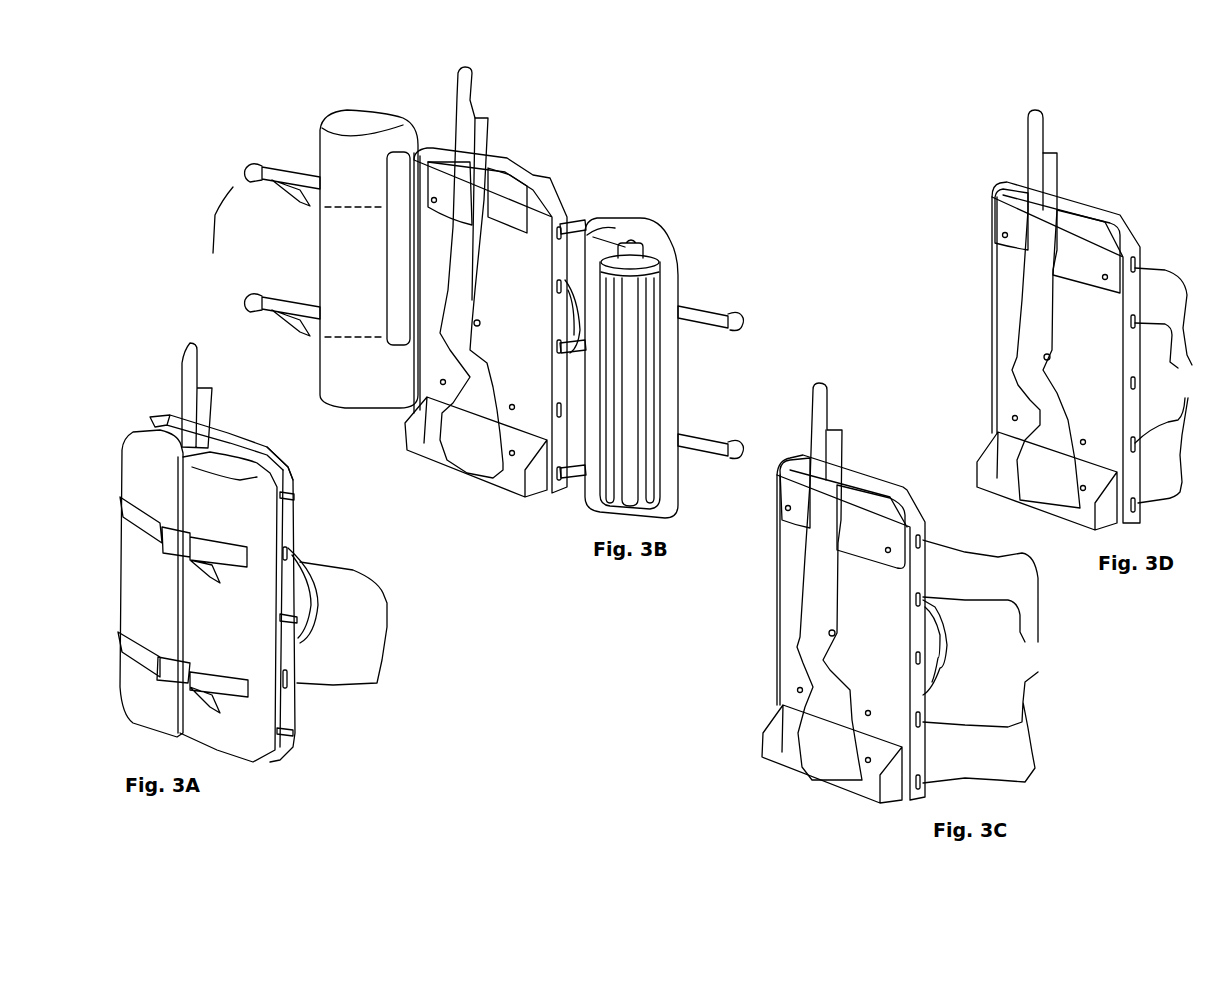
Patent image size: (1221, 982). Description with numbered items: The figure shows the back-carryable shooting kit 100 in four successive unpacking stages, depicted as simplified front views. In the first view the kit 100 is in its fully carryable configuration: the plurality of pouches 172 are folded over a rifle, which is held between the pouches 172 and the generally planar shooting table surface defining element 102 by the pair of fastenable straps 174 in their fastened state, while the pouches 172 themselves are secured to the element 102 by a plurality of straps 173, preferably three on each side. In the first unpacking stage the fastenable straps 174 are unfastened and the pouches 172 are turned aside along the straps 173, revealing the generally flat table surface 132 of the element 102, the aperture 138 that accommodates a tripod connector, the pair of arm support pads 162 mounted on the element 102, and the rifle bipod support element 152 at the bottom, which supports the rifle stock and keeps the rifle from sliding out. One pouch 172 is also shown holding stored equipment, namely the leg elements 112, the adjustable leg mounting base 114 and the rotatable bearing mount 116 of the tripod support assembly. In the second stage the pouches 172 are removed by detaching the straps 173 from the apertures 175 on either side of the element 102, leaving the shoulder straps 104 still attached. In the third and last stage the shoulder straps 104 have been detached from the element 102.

In FIG. 3A, the back-carryable shooting kit 100 is at (393, 735).
In FIG. 3B, the back-carryable shooting kit 100 is at (740, 168).
In FIG. 3C, the back-carryable shooting kit 100 is at (1066, 762).
In FIG. 3D, the back-carryable shooting kit 100 is at (1180, 183).
In FIG. 3B, the generally planar shooting table surface defining element 102 is at (498, 273).
In FIG. 3C, the generally planar shooting table surface defining element 102 is at (777, 572).
In FIG. 3D, the generally planar shooting table surface defining element 102 is at (1007, 280).
In FIG. 3A, the shoulder straps 104 is at (300, 642).
In FIG. 3B, the shoulder straps 104 is at (572, 316).
In FIG. 3C, the shoulder straps 104 is at (948, 632).
In FIG. 3B, the leg elements 112 is at (683, 298).
In FIG. 3B, the adjustable leg mounting base 114 is at (667, 267).
In FIG. 3B, the rotatable bearing mount 116 is at (663, 241).
In FIG. 3C, the generally flat table surface 132 is at (780, 652).
In FIG. 3D, the generally flat table surface 132 is at (1000, 358).
In FIG. 3B, the aperture 138 is at (481, 323).
In FIG. 3C, the aperture 138 is at (836, 633).
In FIG. 3D, the aperture 138 is at (1051, 357).
In FIG. 3B, the rifle bipod support element 152 is at (490, 487).
In FIG. 3C, the rifle bipod support element 152 is at (770, 733).
In FIG. 3D, the rifle bipod support element 152 is at (990, 457).
In FIG. 3B, the arm support pads 162 is at (427, 157).
In FIG. 3C, the arm support pads 162 is at (793, 480).
In FIG. 3D, the arm support pads 162 is at (1003, 197).
In FIG. 3A, the pouches 172 is at (150, 440).
In FIG. 3B, the pouches 172 is at (330, 128).
In FIG. 3A, the straps 173 is at (293, 498).
In FIG. 3B, the straps 173 is at (580, 222).
In FIG. 3A, the fastenable straps 174 is at (116, 527).
In FIG. 3B, the fastenable straps 174 is at (240, 300).
In FIG. 3A, the apertures 175 is at (387, 640).
In FIG. 3B, the apertures 175 is at (557, 287).
In FIG. 3C, the apertures 175 is at (923, 658).
In FIG. 3D, the apertures 175 is at (1135, 385).